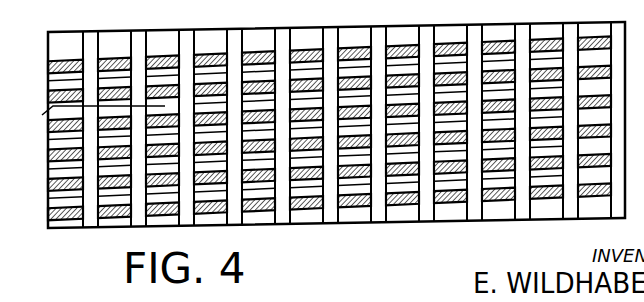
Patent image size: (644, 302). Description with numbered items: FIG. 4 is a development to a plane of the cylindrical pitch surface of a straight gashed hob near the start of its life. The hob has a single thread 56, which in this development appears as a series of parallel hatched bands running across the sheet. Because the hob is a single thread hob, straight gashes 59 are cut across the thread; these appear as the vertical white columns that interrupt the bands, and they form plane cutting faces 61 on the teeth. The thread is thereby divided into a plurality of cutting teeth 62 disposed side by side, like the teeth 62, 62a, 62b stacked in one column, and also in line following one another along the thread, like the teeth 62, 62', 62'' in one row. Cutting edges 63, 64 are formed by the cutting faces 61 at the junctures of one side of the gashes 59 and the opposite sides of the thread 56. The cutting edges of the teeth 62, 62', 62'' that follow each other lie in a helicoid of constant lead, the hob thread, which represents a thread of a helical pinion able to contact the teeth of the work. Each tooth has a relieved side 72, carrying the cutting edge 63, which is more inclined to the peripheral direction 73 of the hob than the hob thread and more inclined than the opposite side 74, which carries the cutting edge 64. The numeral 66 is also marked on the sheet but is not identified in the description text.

The single thread 56 is at (348, 44).
The straight gashes 59 is at (479, 213).
The plane cutting faces 61 is at (337, 200).
The cutting teeth 62 is at (48, 205).
The cutting tooth 62a is at (53, 183).
The cutting tooth 62b is at (53, 157).
The cutting tooth 62' is at (80, 159).
The cutting tooth 62'' is at (129, 163).
The cutting edge 63 is at (145, 68).
The cutting edge 64 is at (160, 43).
The bar 66 is at (425, 40).
The relieved side 72 is at (89, 115).
The peripheral direction 73 is at (89, 103).
The opposite side 74 is at (73, 89).